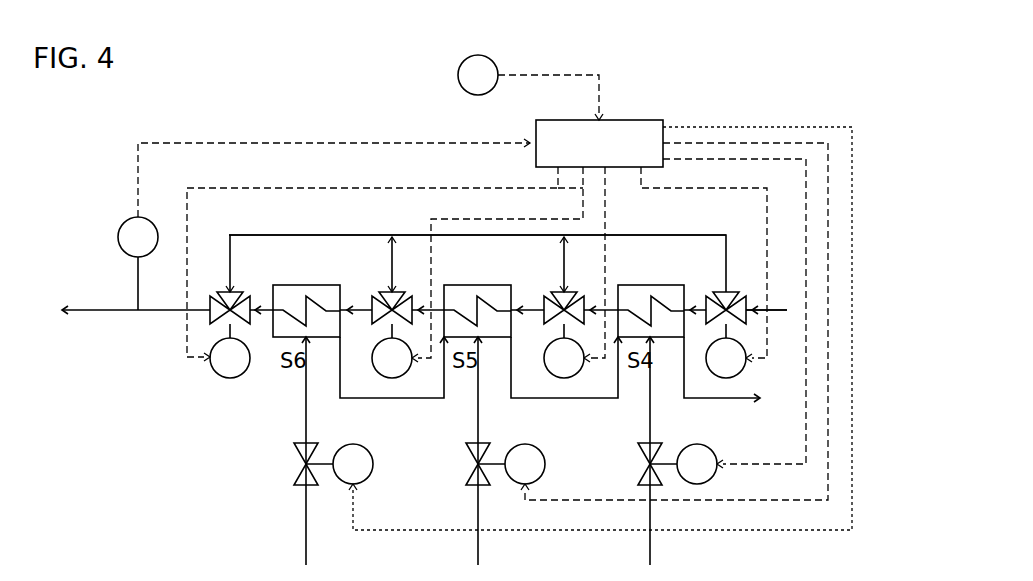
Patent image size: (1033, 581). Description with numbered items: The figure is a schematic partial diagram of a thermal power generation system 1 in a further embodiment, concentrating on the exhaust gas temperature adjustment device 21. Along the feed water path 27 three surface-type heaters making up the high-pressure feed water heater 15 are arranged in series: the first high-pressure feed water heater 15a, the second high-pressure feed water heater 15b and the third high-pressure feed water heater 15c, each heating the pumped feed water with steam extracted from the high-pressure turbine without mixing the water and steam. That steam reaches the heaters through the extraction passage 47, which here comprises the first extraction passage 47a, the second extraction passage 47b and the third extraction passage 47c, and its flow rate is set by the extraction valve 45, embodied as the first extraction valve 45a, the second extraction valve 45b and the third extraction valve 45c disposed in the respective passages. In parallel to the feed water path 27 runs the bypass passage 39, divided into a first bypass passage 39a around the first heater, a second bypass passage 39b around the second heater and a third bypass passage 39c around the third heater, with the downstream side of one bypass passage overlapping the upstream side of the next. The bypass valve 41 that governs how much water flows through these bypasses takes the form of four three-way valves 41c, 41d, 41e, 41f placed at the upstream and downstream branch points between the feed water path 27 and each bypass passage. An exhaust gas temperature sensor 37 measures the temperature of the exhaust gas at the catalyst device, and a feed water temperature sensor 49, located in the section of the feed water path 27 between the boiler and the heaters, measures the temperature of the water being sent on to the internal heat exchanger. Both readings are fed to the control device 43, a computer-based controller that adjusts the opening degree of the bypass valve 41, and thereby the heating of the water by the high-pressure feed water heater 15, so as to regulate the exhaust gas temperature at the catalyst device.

The thermal power generation system 1 is at (776, 94).
The exhaust gas temperature adjustment device 21 is at (728, 94).
The control device 43 is at (641, 120).
The exhaust gas temperature sensor 37 is at (458, 75).
The feed water temperature sensor 49 is at (125, 222).
The feed water path 27 is at (777, 310).
The bypass passage 39 is at (448, 235).
The first bypass passage 39a is at (628, 235).
The second bypass passage 39b is at (478, 235).
The third bypass passage 39c is at (300, 235).
The bypass valve 41 is at (477, 272).
The three-way valve 41c is at (727, 290).
The three-way valve 41d is at (563, 290).
The three-way valve 41e is at (391, 290).
The three-way valve 41f is at (229, 290).
The high-pressure feed water heater 15 is at (515, 322).
The first high-pressure feed water heater 15a is at (648, 285).
The second high-pressure feed water heater 15b is at (478, 285).
The third high-pressure feed water heater 15c is at (305, 285).
The extraction valve 45 is at (524, 328).
The first extraction valve 45a is at (640, 451).
The second extraction valve 45b is at (468, 451).
The third extraction valve 45c is at (296, 451).
The extraction passage 47 is at (540, 452).
The first extraction passage 47a is at (653, 542).
The second extraction passage 47b is at (481, 542).
The third extraction passage 47c is at (309, 542).